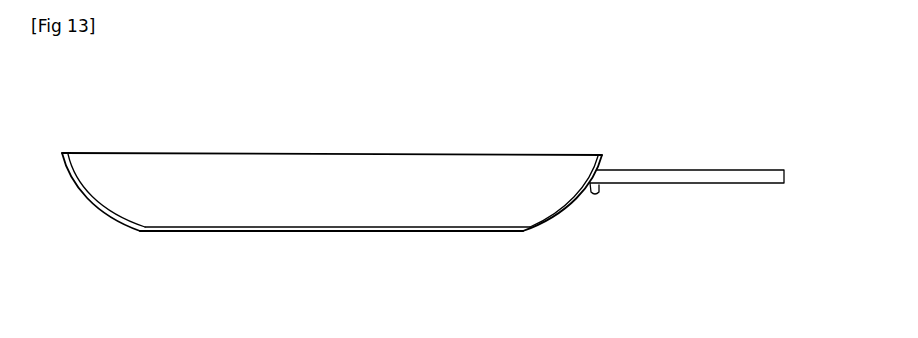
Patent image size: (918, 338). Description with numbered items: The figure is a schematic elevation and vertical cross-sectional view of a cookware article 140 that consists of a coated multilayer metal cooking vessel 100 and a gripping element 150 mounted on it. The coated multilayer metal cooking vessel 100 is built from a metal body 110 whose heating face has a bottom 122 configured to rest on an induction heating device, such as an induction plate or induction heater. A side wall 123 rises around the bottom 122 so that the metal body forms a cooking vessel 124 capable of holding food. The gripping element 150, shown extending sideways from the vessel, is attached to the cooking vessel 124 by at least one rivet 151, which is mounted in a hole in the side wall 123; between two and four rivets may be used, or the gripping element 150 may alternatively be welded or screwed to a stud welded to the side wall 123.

The coated multilayer metal cooking vessel 100 is at (423, 193).
The metal body 110 is at (349, 222).
The bottom 122 is at (333, 233).
The side wall 123 is at (569, 208).
The cooking vessel 124 is at (371, 182).
The cookware article 140 is at (482, 149).
The gripping element 150 is at (692, 170).
The rivet 151 is at (601, 193).